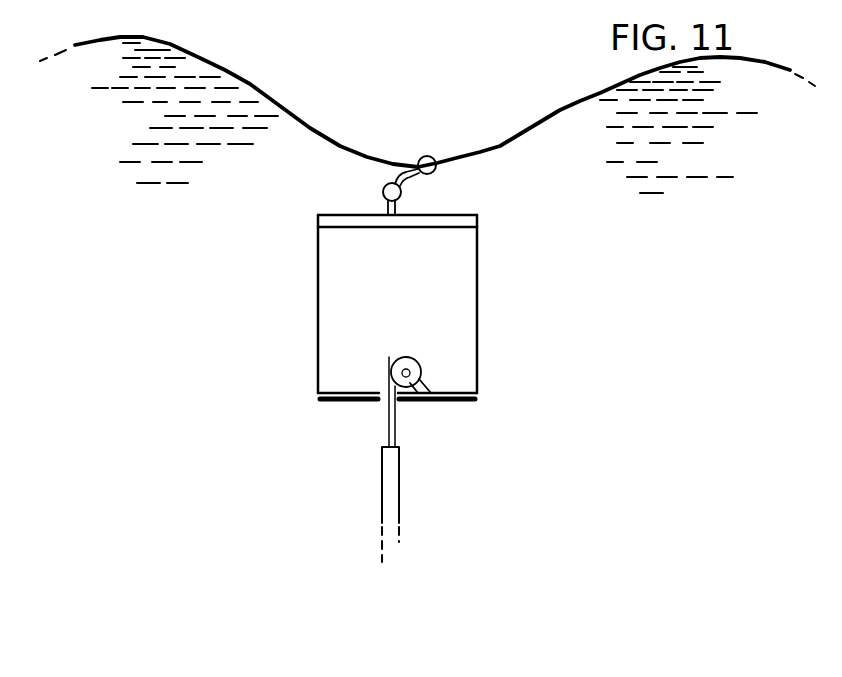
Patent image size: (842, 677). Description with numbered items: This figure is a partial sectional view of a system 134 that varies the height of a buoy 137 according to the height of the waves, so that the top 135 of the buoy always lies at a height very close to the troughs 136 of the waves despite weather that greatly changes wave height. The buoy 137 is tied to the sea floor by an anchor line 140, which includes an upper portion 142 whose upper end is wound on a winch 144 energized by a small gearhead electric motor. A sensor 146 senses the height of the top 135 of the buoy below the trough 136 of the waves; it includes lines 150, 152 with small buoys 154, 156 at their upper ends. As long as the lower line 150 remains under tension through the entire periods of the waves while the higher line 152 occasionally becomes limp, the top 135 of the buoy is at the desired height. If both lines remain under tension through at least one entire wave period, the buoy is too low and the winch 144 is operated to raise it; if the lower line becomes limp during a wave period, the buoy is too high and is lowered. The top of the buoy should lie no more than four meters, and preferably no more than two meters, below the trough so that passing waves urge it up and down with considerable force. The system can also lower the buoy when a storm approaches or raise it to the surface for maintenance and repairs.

The system 134 is at (337, 296).
The top 135 is at (373, 210).
The troughs 136 is at (384, 162).
The buoy 137 is at (318, 338).
The anchor line 140 is at (400, 505).
The upper portion 142 is at (396, 422).
The winch 144 is at (413, 358).
The sensor 146 is at (360, 182).
The line 150 is at (397, 209).
The line 152 is at (408, 172).
The small buoy 154 is at (402, 191).
The small buoy 156 is at (436, 159).